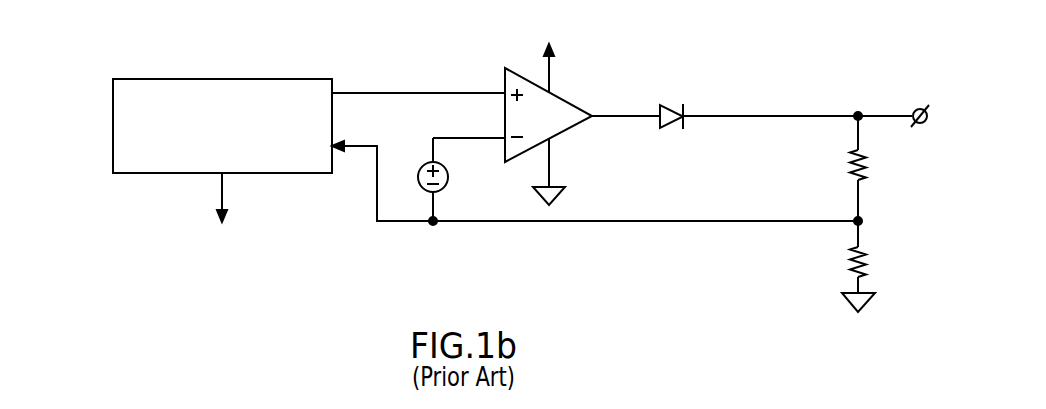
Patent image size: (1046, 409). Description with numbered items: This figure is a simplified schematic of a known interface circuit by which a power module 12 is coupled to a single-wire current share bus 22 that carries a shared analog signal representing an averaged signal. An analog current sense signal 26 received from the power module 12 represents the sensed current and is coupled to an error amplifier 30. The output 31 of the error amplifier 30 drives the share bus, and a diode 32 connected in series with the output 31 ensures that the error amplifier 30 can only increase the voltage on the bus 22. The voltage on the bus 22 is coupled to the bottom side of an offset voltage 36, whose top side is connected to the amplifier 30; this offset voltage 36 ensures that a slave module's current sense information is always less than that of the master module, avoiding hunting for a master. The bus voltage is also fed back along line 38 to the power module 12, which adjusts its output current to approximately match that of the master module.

The power module 12 is at (222, 78).
The single-wire current share bus 22 is at (884, 118).
The analog current sense signal 26 is at (490, 91).
The error amplifier 30 is at (568, 99).
The error amplifier output 31 is at (627, 117).
The diode 32 is at (672, 104).
The offset voltage 36 is at (418, 174).
The feedback line 38 is at (377, 190).